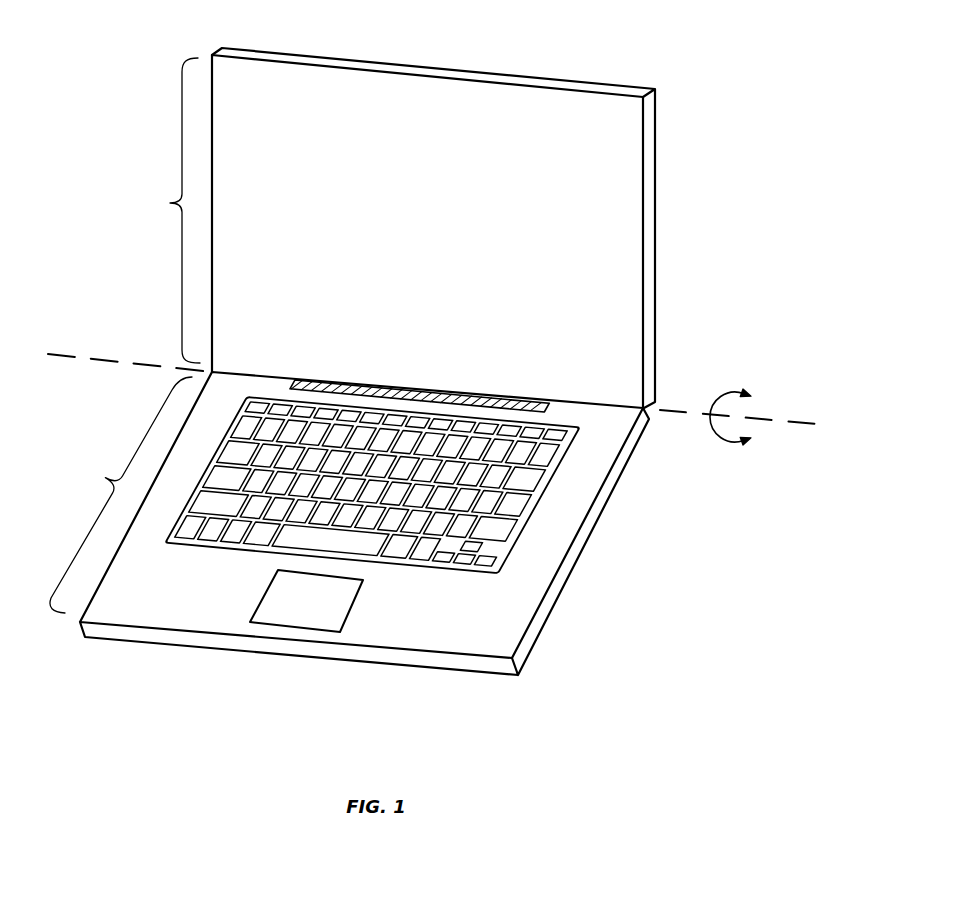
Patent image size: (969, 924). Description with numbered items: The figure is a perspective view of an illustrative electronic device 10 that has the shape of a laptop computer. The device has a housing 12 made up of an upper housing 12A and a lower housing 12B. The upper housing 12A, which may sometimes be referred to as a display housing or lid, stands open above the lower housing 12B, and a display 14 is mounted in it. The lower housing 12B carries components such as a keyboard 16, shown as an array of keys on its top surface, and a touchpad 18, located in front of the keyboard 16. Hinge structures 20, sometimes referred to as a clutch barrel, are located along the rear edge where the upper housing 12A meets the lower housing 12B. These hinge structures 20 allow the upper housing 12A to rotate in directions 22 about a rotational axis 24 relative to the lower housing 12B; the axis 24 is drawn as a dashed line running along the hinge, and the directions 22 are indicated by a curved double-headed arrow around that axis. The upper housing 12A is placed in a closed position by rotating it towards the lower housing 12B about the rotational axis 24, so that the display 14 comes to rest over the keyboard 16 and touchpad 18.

The electronic device 10 is at (710, 60).
The housing 12 is at (657, 348).
The upper housing 12A is at (165, 210).
The lower housing 12B is at (349, 523).
The display 14 is at (567, 220).
The keyboard 16 is at (513, 503).
The touchpad 18 is at (350, 610).
The hinge structures 20 is at (527, 397).
The directions 22 is at (733, 445).
The rotational axis 24 is at (102, 358).